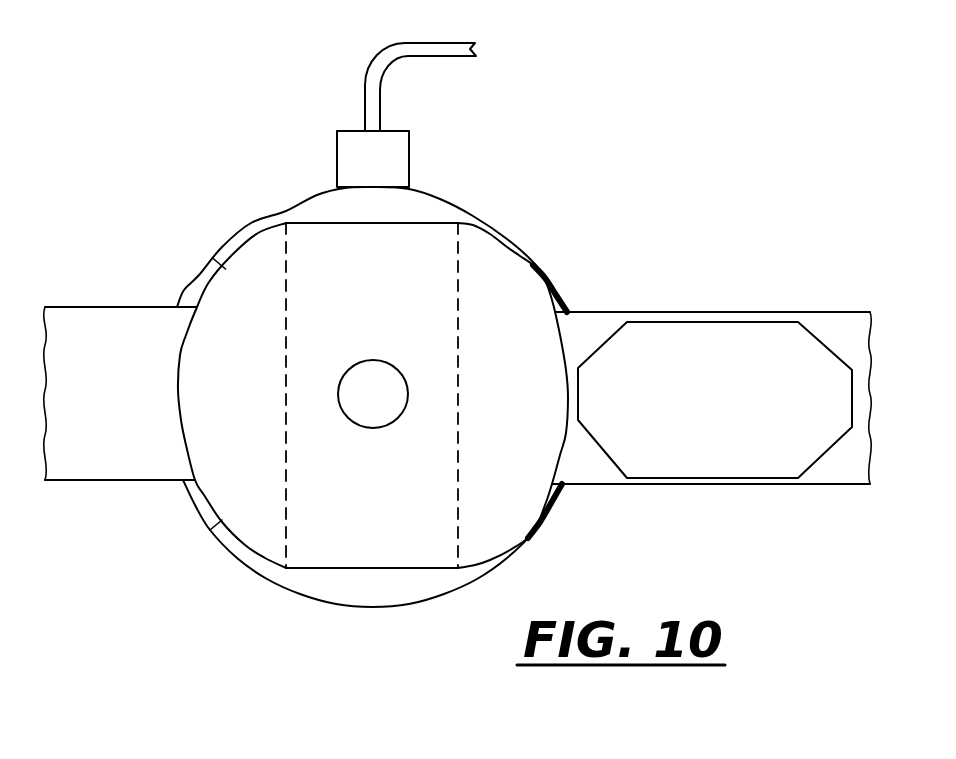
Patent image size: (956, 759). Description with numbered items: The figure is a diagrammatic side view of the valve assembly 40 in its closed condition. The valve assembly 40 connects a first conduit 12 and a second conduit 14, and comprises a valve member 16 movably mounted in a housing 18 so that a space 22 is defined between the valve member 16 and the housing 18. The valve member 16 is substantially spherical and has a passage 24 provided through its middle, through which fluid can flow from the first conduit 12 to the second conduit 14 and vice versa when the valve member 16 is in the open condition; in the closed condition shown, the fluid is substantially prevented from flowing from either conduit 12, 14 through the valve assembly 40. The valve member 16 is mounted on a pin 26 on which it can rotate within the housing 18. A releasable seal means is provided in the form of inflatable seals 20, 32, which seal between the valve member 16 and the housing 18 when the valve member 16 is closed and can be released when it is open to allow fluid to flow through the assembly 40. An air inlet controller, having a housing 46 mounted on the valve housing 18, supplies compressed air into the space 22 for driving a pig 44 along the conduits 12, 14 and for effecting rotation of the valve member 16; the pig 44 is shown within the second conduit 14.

The first conduit 12 is at (95, 480).
The second conduit 14 is at (825, 487).
The valve member 16 is at (483, 545).
The housing 18 is at (292, 592).
The inflatable seal 20 is at (557, 288).
The space 22 is at (258, 222).
The passage 24 is at (405, 556).
The pin 26 is at (370, 422).
The inflatable seal 32 is at (200, 282).
The valve assembly 40 is at (578, 210).
The pig 44 is at (698, 463).
The housing 46 is at (409, 173).